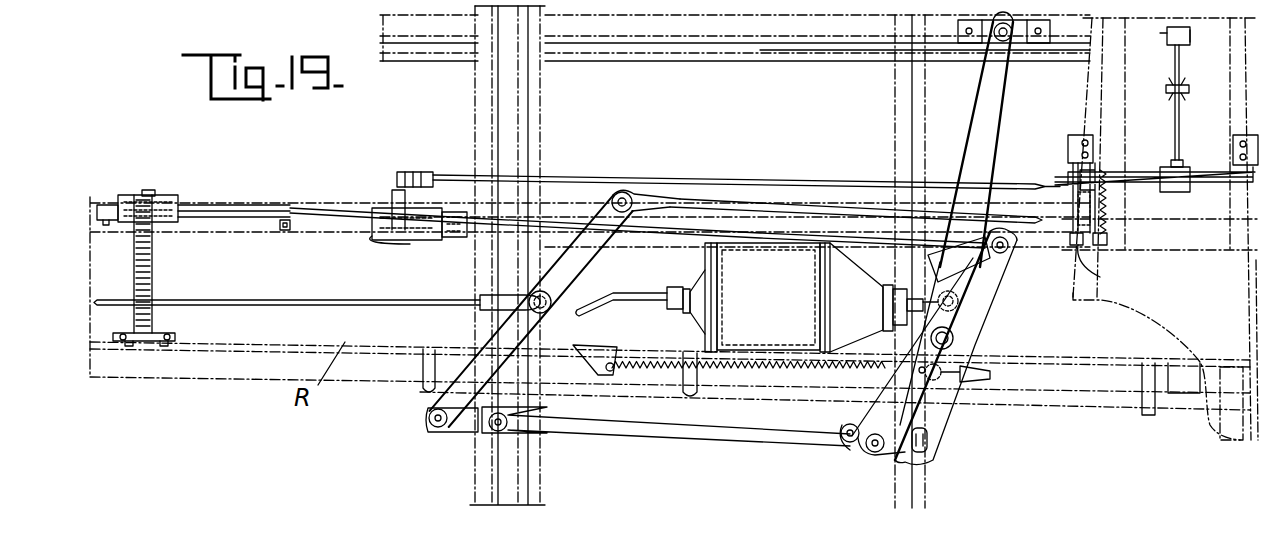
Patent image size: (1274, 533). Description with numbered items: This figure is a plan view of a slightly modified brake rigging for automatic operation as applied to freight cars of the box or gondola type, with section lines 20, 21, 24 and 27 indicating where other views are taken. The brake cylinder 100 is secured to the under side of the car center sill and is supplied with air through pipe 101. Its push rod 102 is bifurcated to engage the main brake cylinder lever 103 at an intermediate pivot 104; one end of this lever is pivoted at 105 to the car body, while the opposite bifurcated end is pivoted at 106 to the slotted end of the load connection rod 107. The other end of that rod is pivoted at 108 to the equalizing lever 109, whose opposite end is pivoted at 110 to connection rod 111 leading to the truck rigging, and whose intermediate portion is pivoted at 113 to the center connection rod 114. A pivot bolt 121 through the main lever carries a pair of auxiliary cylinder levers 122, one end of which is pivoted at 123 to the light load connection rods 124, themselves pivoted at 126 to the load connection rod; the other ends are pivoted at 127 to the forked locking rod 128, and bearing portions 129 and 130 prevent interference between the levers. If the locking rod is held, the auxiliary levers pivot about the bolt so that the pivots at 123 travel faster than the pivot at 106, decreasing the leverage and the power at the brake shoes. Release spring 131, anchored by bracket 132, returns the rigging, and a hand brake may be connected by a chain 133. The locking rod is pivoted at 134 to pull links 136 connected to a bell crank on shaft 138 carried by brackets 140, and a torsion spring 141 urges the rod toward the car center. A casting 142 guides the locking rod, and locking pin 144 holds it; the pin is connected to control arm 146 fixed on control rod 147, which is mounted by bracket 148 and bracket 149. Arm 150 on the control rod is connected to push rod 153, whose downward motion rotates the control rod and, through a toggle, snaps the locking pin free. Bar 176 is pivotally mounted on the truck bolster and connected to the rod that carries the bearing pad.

The section line 20 is at (1049, 498).
The section line 21 is at (1032, 472).
The section line 24 is at (470, 273).
The section line 27 is at (196, 405).
The brake cylinder 100 is at (806, 297).
The pipe 101 is at (618, 284).
The brake cylinder push rod 102 is at (925, 292).
The main brake cylinder lever 103 is at (976, 139).
The pivotal connection 104 is at (938, 308).
The pivotal connection 105 is at (995, 38).
The pivot 106 is at (931, 443).
The load connection rod 107 is at (462, 430).
The pivotal connection 108 is at (429, 418).
The equalizing lever 109 is at (542, 288).
The pivotal connection 110 is at (611, 201).
The connection rod 111 is at (836, 219).
The pivotal connection 113 is at (547, 310).
The center connection rod 114 is at (303, 304).
The pivot bolt 121 is at (954, 341).
The auxiliary cylinder levers 122 is at (961, 348).
The pivotal connection 123 is at (875, 452).
The auxiliary or light load connection rods 124 is at (846, 443).
The pivotal connection 126 is at (504, 430).
The pivotal connection 127 is at (990, 260).
The forked locking rod 128 is at (318, 199).
The bearing portion 129 is at (959, 259).
The bearing portion 130 is at (960, 300).
The release spring 131 is at (712, 380).
The bracket 132 is at (590, 358).
The chain 133 is at (985, 378).
The pivotal connection 134 is at (286, 230).
The pull links 136 is at (216, 212).
The shaft 138 is at (150, 341).
The brackets 140 is at (134, 340).
The torsion spring 141 is at (134, 268).
The casting 142 is at (372, 228).
The locking pin 144 is at (394, 204).
The control arm 146 is at (405, 172).
The control rod 147 is at (737, 184).
The bracket 148 is at (433, 214).
The bracket 149 is at (1090, 165).
The arm 150 is at (1071, 208).
The push rod 153 is at (1100, 277).
The bar 176 is at (1179, 60).